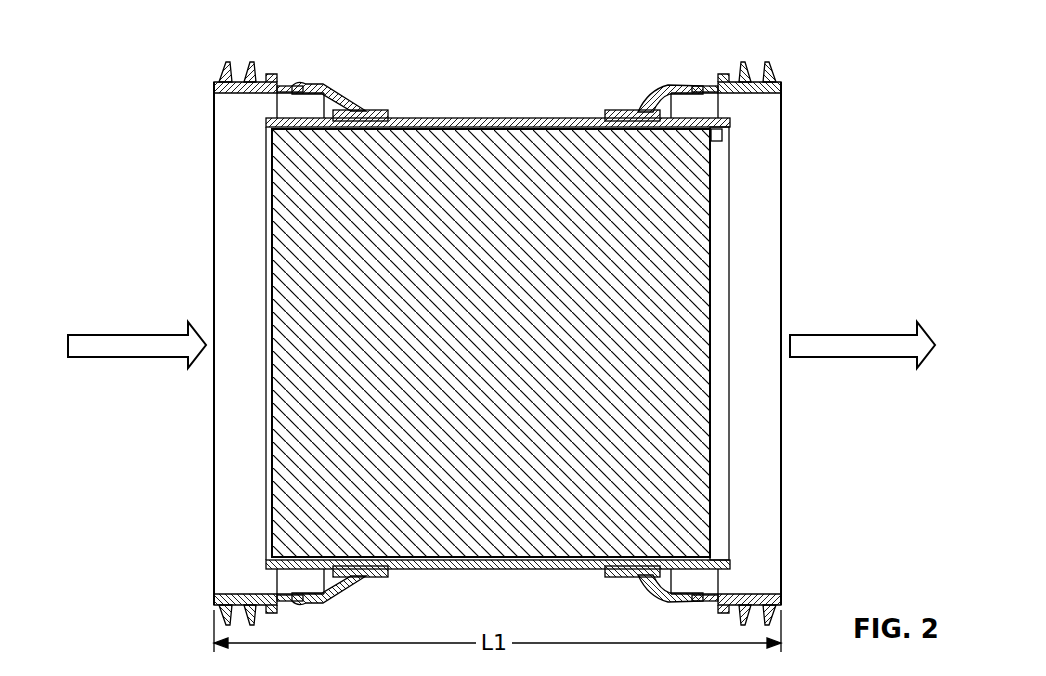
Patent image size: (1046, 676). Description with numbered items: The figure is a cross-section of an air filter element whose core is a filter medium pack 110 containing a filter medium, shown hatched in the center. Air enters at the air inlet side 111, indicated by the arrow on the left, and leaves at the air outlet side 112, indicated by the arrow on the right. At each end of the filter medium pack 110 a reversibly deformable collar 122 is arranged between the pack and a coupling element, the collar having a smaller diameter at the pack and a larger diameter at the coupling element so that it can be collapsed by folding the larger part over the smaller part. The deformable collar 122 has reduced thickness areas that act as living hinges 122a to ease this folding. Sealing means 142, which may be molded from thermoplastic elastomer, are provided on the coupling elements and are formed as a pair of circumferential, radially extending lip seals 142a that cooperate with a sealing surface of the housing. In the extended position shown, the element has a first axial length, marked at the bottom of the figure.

The filter medium pack 110 is at (472, 356).
The air inlet side 111 is at (142, 333).
The air outlet side 112 is at (833, 333).
The reversibly deformable collar 122 is at (636, 107).
The living hinges 122a is at (337, 90).
The sealing means 142 is at (768, 80).
The lip seals 142a is at (227, 80).